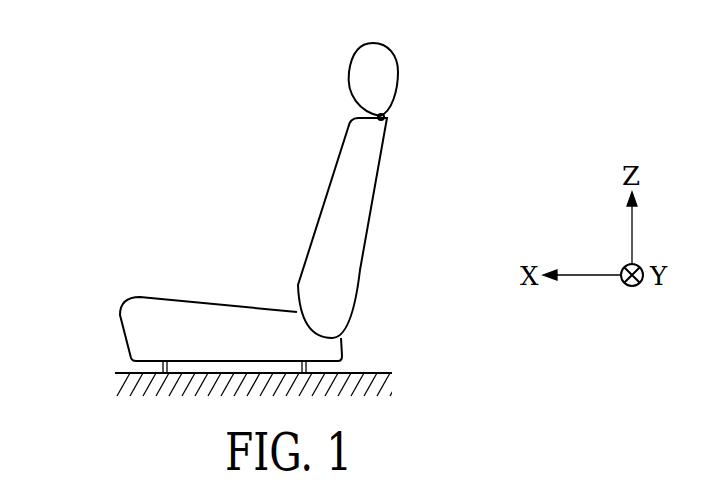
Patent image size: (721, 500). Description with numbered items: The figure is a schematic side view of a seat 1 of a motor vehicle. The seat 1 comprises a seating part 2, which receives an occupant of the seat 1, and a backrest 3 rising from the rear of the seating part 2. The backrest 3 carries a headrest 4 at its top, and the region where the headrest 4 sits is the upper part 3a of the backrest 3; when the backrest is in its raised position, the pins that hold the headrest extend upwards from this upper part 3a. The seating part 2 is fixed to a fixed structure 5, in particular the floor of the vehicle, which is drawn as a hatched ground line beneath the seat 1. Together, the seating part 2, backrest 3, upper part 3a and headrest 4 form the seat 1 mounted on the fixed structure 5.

The seat 1 is at (257, 165).
The seating part 2 is at (165, 318).
The backrest 3 is at (357, 195).
The upper part of the backrest 3a is at (387, 121).
The headrest 4 is at (382, 67).
The fixed structure 5 is at (373, 372).